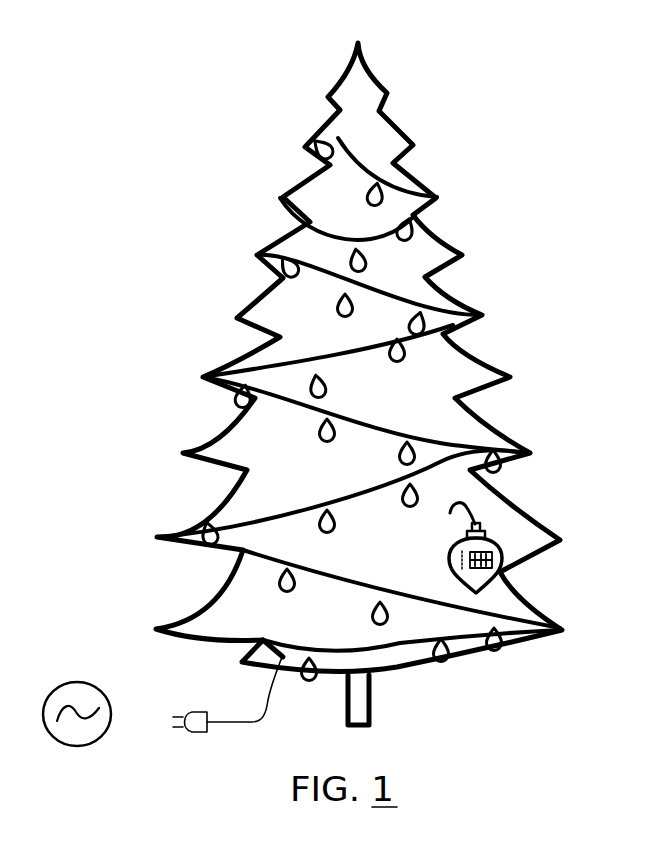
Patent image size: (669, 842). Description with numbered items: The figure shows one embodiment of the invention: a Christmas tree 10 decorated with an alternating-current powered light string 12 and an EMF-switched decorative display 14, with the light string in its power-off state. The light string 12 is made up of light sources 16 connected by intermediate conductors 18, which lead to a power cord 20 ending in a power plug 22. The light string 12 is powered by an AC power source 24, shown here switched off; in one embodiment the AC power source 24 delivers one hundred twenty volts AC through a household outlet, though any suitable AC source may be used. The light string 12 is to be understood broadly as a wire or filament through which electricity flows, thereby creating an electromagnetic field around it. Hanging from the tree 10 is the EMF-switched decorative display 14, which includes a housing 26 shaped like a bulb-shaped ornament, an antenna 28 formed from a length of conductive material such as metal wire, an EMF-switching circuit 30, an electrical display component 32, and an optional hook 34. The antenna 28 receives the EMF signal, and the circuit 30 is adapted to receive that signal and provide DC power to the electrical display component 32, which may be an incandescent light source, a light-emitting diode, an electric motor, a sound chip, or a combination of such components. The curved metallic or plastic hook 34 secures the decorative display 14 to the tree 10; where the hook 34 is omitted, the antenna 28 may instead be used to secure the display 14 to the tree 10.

The Christmas tree 10 is at (383, 80).
The light string 12 is at (392, 293).
The EMF-switched decorative display 14 is at (545, 507).
The light sources 16 is at (325, 138).
The intermediate conductors 18 is at (366, 166).
The power cord 20 is at (268, 697).
The power plug 22 is at (192, 712).
The AC power source 24 is at (77, 719).
The housing 26 is at (493, 550).
The antenna 28 is at (465, 509).
The EMF-switching circuit 30 is at (497, 547).
The electrical display component 32 is at (502, 560).
The hook 34 is at (478, 528).